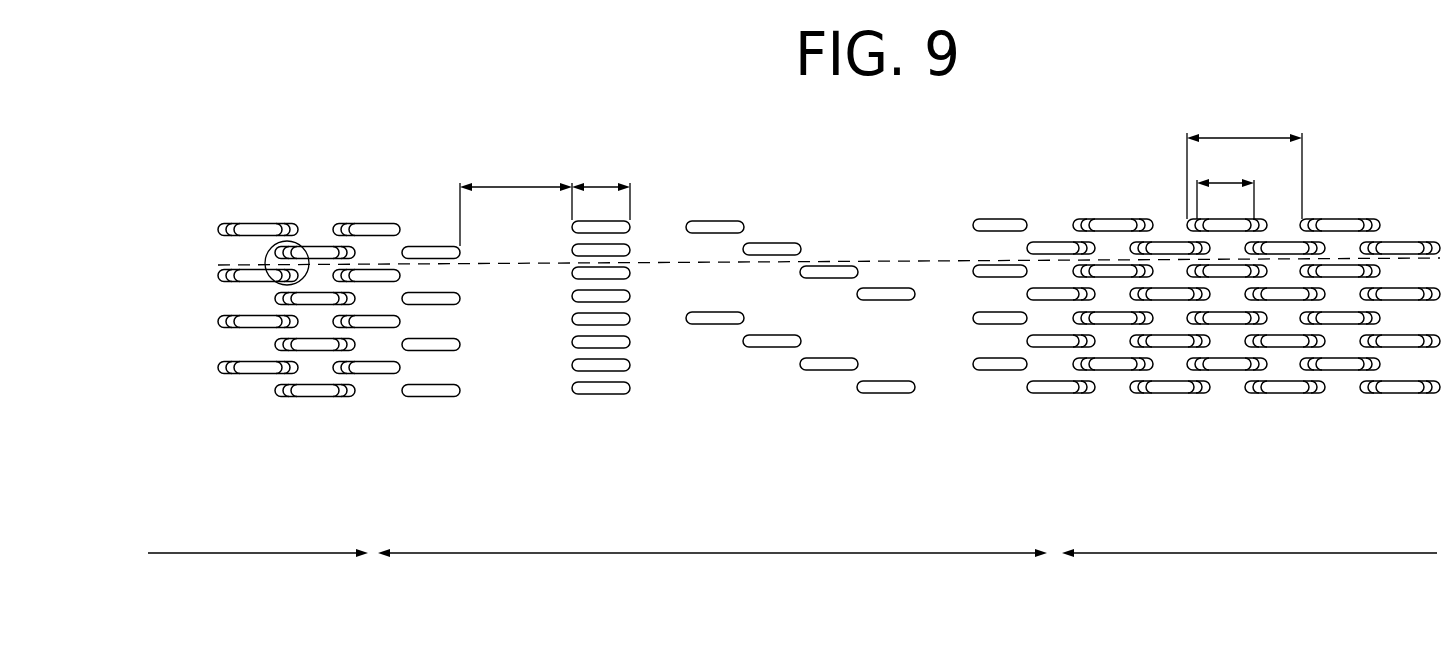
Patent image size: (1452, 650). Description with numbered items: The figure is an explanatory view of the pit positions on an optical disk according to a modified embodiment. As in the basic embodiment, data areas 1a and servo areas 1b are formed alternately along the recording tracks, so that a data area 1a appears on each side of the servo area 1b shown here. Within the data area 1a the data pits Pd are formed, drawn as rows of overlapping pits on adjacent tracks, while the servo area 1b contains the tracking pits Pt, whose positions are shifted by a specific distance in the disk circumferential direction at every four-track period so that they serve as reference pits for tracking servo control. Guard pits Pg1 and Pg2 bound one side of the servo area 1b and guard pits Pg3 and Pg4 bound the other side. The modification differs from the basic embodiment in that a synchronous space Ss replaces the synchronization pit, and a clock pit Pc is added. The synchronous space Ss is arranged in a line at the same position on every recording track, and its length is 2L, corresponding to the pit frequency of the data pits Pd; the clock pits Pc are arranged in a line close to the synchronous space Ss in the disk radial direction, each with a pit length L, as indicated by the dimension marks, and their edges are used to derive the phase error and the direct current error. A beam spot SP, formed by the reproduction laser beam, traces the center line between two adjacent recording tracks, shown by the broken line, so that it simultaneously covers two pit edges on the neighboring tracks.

The beam spot SP is at (294, 241).
The data area 1a is at (792, 391).
The servo area 1b is at (712, 539).
The guard pit Pg1 is at (378, 381).
The guard pit Pg2 is at (437, 403).
The synchronous space Ss is at (521, 403).
The clock pit Pc is at (595, 403).
The tracking pit Pt is at (887, 400).
The guard pit Pg3 is at (1000, 376).
The guard pit Pg4 is at (1050, 400).
The data pit Pd is at (1284, 399).
The length of synchronous space 2L is at (881, 177).
The pit length of clock pit L is at (913, 187).